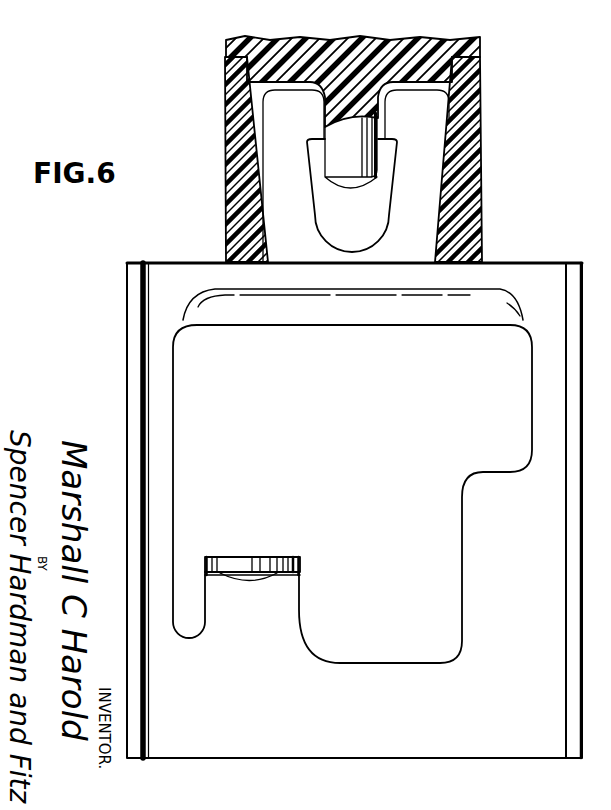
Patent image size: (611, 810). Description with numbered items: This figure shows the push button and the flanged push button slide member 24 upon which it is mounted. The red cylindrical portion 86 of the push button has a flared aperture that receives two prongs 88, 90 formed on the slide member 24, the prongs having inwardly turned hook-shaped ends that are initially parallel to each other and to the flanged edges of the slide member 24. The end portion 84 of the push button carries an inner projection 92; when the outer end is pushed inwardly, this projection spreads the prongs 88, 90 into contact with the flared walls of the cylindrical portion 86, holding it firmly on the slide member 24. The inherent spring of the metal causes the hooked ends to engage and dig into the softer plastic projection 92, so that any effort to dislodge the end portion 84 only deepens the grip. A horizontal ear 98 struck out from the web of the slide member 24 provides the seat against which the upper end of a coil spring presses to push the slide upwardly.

The push button slide member 24 is at (130, 395).
The end portion of the push button 84 is at (225, 44).
The red cylindrical portion of the push button 86 is at (225, 197).
The prong 88 is at (428, 118).
The prong 90 is at (277, 118).
The projection 92 is at (355, 170).
The horizontal ear 98 is at (255, 560).